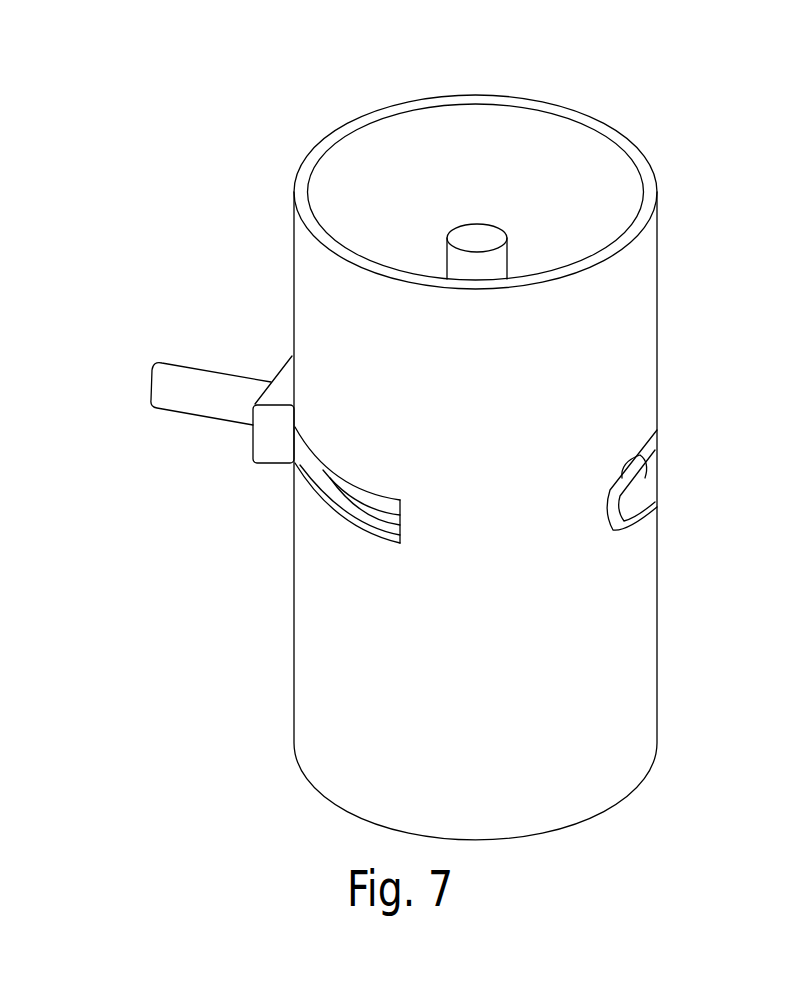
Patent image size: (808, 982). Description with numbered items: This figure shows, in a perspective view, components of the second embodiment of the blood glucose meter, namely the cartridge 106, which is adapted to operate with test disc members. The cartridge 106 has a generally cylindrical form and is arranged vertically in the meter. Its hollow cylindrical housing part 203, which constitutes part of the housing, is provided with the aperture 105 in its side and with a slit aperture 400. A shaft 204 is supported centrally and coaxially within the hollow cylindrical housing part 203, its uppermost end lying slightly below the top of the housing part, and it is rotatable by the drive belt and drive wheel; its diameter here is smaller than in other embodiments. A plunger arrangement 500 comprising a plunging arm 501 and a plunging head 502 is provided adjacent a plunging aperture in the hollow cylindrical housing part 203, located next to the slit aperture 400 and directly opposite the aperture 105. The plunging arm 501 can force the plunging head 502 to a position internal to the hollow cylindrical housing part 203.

The cartridge 106 is at (132, 102).
The hollow cylindrical housing part 203 is at (612, 327).
The shaft 204 is at (478, 238).
The aperture 105 is at (623, 497).
The slit aperture 400 is at (318, 477).
The plunger arrangement 500 is at (186, 452).
The plunging arm 501 is at (213, 392).
The plunging head 502 is at (283, 393).